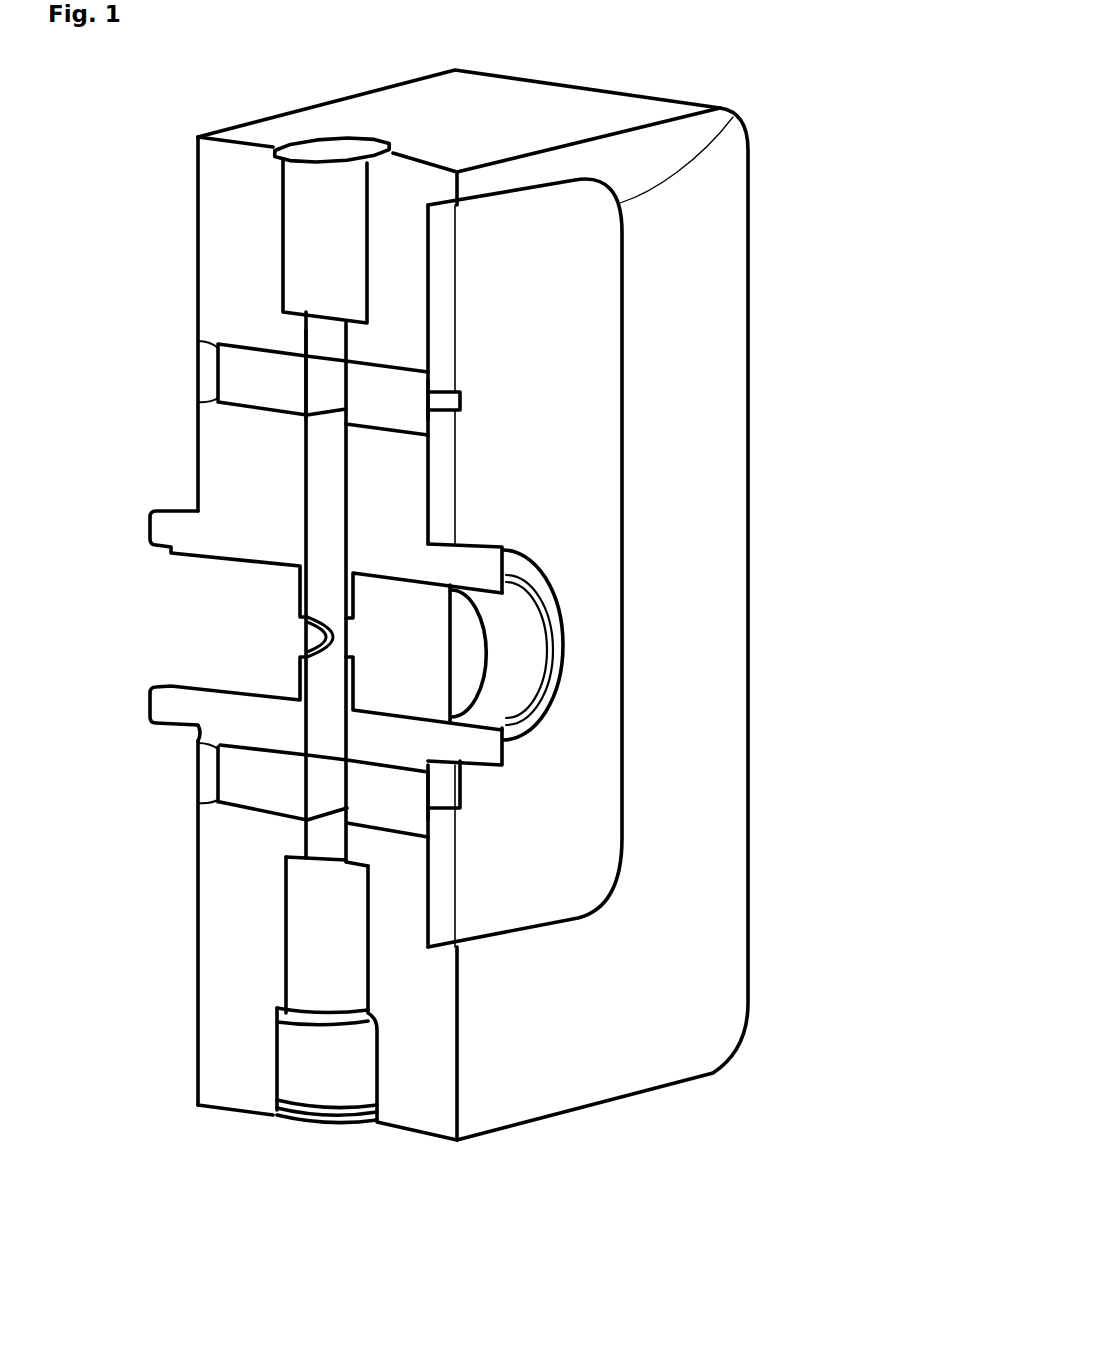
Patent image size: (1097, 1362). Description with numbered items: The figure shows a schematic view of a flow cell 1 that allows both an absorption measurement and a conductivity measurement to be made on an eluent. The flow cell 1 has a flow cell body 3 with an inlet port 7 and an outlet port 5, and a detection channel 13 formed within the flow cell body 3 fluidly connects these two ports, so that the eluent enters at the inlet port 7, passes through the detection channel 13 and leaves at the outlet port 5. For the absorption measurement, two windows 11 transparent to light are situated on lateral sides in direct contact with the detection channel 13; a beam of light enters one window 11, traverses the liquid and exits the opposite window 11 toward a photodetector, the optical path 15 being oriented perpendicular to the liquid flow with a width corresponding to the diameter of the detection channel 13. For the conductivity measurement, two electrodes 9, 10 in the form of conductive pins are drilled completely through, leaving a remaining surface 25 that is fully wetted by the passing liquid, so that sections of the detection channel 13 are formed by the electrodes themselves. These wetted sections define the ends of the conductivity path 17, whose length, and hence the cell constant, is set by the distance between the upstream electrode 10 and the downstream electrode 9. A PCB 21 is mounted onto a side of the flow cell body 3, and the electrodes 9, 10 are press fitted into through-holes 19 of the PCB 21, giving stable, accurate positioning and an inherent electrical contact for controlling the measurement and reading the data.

The flow cell 1 is at (713, 69).
The flow cell body 3 is at (662, 256).
The outlet port 5 is at (346, 180).
The inlet port 7 is at (371, 1121).
The downstream electrode 9 is at (242, 378).
The upstream electrode 10 is at (244, 763).
The windows 11 is at (201, 626).
The detection channel 13 is at (338, 523).
The optical path 15 is at (343, 637).
The conductivity path 17 is at (340, 392).
The through-holes 19 is at (470, 400).
The PCB 21 is at (737, 112).
The remaining surface 25 is at (292, 370).